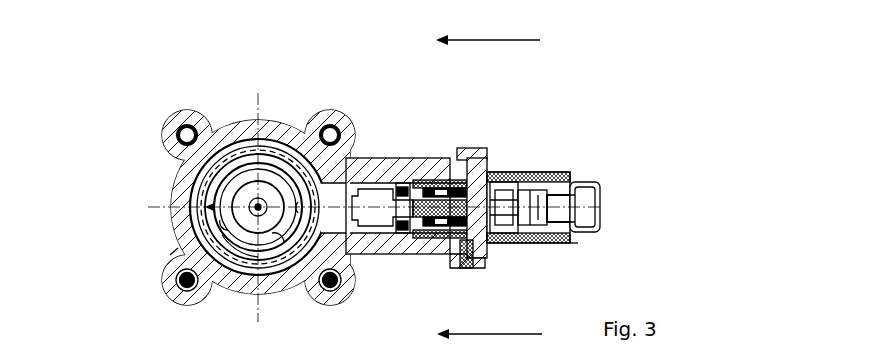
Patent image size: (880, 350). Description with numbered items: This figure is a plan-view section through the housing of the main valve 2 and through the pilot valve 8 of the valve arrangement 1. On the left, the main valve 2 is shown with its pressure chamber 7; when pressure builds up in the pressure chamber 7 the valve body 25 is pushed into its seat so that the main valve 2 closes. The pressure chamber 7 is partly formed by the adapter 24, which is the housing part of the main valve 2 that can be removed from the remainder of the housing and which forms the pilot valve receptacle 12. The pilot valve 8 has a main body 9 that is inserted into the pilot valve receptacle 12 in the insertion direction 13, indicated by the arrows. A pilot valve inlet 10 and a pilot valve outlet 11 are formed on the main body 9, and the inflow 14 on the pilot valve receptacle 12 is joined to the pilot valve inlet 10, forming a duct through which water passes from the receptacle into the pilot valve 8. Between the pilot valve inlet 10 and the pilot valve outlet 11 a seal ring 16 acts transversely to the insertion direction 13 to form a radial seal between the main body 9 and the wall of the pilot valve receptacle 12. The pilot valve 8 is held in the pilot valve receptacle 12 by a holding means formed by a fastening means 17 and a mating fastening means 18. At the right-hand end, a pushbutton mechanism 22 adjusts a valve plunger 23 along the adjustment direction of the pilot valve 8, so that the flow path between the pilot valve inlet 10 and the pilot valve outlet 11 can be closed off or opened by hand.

The valve arrangement 1 is at (707, 141).
The main valve 2 is at (180, 204).
The pressure chamber 7 is at (234, 175).
The pilot valve 8 is at (570, 165).
The main body 9 is at (578, 242).
The pilot valve inlet 10 is at (433, 181).
The pilot valve outlet 11 is at (467, 268).
The pilot valve receptacle 12 is at (470, 156).
The insertion direction 13 is at (489, 178).
The inflow 14 is at (370, 156).
The seal ring 16 is at (403, 187).
The fastening means 17 is at (492, 162).
The mating fastening means 18 is at (456, 160).
The pushbutton mechanism 22 is at (603, 206).
The valve plunger 23 is at (478, 245).
The adapter 24 is at (178, 248).
The valve body 25 is at (240, 243).